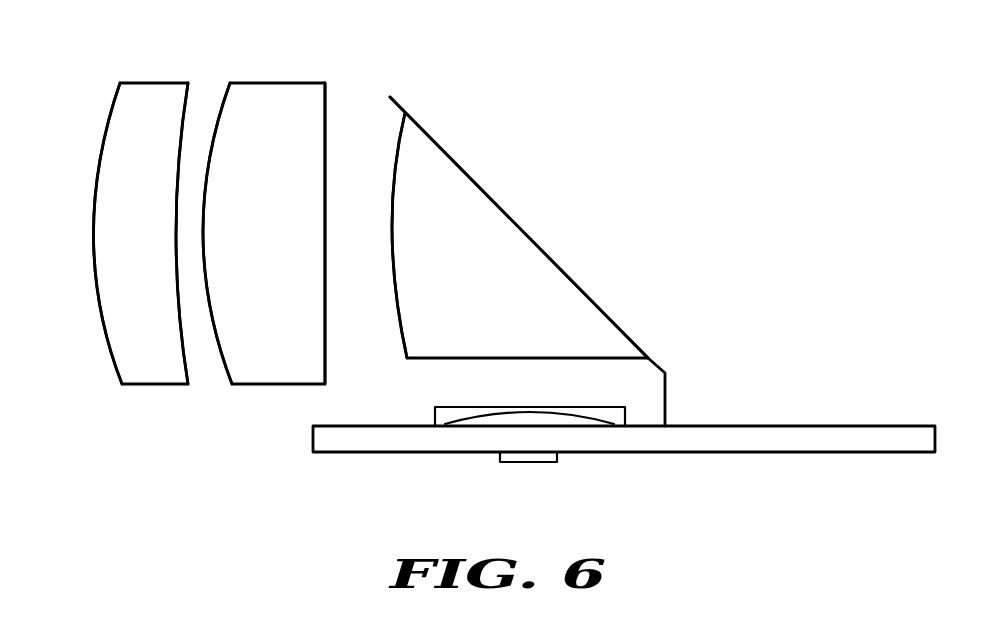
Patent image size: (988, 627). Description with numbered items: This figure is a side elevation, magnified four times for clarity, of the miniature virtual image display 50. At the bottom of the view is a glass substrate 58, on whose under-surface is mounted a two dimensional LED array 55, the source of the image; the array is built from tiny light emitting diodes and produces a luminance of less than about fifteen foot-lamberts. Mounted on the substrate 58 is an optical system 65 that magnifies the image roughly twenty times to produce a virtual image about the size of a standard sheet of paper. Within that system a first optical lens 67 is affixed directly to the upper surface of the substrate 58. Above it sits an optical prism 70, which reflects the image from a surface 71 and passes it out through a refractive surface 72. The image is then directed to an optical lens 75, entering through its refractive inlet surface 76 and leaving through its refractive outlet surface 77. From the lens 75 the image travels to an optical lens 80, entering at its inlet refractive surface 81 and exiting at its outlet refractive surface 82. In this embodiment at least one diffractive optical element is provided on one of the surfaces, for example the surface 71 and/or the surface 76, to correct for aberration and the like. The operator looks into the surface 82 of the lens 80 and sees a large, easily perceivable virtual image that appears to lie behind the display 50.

The miniature virtual image display 50 is at (251, 552).
The two dimensional LED array 55 is at (532, 463).
The glass substrate 58 is at (853, 425).
The optical system 65 is at (446, 57).
The first optical lens 67 is at (447, 406).
The optical prism 70 is at (472, 294).
The reflecting surface 71 is at (486, 194).
The refractive surface 72 is at (393, 210).
The optical lens 75 is at (249, 251).
The refractive inlet surface 76 is at (326, 100).
The refractive outlet surface 77 is at (225, 103).
The optical lens 80 is at (121, 251).
The inlet refractive surface 81 is at (186, 366).
The outlet refractive surface 82 is at (116, 366).